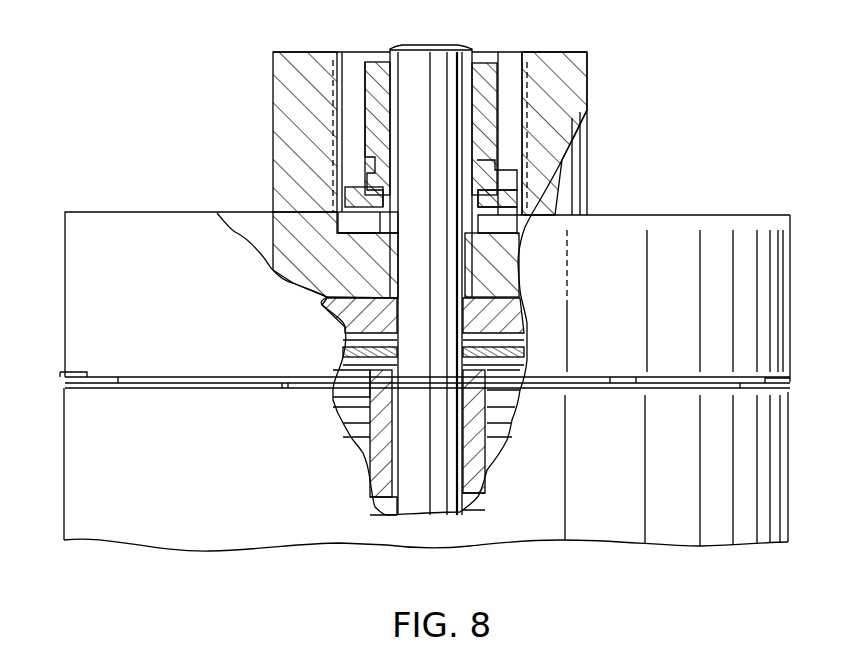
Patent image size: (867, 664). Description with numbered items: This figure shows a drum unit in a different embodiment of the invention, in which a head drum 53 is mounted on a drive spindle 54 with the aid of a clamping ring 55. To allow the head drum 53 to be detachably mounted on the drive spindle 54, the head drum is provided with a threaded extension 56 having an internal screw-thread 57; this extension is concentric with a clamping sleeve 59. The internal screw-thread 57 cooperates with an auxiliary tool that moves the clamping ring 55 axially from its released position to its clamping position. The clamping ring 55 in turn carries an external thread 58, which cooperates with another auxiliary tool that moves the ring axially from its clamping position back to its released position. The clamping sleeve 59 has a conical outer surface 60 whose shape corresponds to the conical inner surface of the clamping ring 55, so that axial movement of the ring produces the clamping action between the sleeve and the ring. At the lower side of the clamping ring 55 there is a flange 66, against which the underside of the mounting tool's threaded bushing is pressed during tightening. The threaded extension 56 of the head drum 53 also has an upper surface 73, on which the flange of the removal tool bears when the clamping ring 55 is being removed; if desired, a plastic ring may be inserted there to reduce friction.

The head drum 53 is at (713, 248).
The drive spindle 54 is at (437, 263).
The clamping ring 55 is at (520, 113).
The threaded extension 56 is at (560, 80).
The internal screw-thread 57 is at (485, 122).
The external thread 58 is at (368, 92).
The clamping sleeve 59 is at (367, 125).
The conical outer surface 60 is at (367, 143).
The flange 66 is at (503, 198).
The upper surface 73 is at (309, 50).